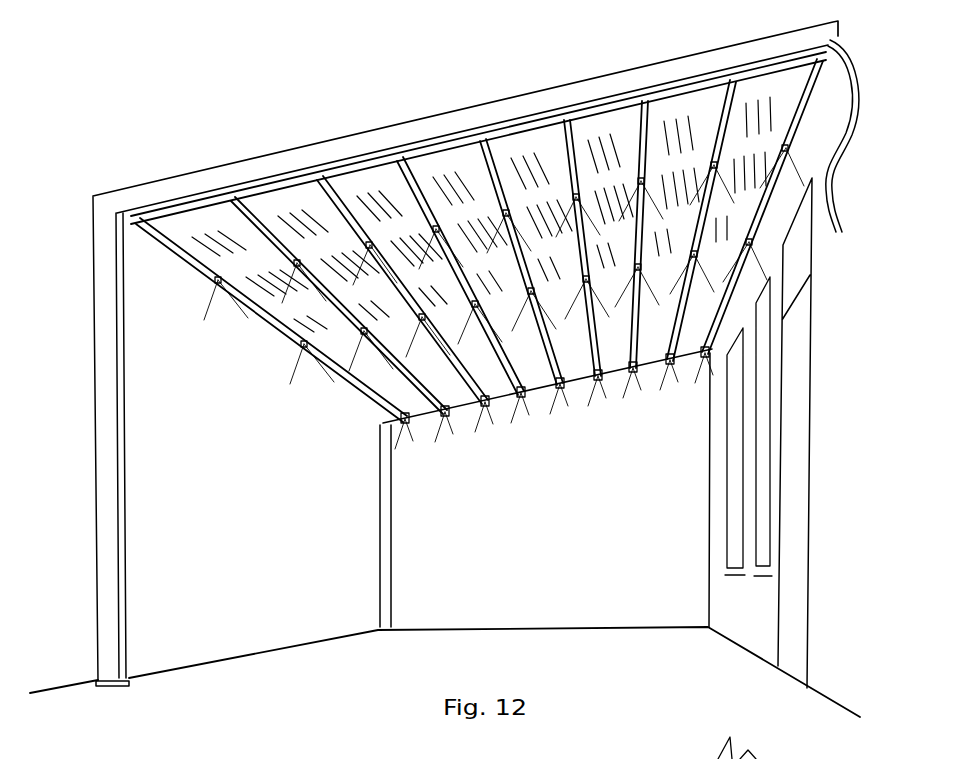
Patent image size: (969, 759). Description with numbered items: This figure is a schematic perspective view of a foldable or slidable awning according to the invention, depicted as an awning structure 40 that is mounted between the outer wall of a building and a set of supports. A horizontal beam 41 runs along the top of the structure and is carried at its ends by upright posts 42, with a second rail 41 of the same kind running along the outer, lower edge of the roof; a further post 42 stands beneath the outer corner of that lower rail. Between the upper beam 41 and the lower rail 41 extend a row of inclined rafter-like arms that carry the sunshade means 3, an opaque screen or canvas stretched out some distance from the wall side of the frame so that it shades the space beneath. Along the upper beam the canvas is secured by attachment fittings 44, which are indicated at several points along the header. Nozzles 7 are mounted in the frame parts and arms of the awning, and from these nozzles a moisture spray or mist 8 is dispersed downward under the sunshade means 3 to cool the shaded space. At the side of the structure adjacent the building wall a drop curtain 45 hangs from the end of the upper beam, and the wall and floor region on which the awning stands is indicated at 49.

The awning assembly 40 is at (465, 242).
The support beam / rail 41 is at (193, 186).
The support post 42 is at (105, 503).
The header rail attachment 44 is at (517, 140).
The drop curtain 45 is at (837, 238).
The floor / wall 49 is at (747, 633).
The nozzles 7 is at (350, 213).
The moisture spray or mist 8 is at (262, 360).
The sunshade means 3 is at (502, 383).